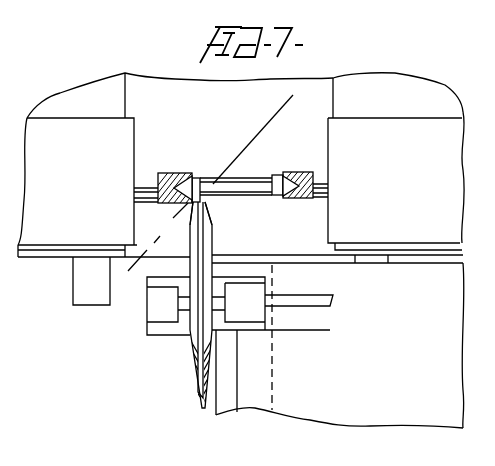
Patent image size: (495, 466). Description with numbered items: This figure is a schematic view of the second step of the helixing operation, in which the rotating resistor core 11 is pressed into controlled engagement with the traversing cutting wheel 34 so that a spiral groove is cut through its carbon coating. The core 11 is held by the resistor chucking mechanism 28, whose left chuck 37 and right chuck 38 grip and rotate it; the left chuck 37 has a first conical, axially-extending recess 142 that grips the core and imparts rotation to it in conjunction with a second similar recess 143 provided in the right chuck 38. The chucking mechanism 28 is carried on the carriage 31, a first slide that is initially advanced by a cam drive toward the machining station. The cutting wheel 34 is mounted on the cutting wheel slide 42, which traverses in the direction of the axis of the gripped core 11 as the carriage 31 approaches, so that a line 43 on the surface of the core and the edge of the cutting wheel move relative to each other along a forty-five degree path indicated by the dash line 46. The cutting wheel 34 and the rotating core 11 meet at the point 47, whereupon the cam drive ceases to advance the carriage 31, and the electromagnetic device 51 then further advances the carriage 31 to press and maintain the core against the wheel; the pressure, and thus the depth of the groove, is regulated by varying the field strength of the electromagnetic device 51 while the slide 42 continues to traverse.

The carriage 31 is at (181, 61).
The resistor chucking mechanism 28 is at (343, 124).
The dash line 46 is at (262, 127).
The left chuck 37 is at (152, 175).
The line 43 is at (204, 174).
The resistor core 11 is at (251, 180).
The right chuck 38 is at (306, 173).
The first conical, axially-extending recess 142 is at (134, 190).
The second recess 143 is at (318, 186).
The point 47 is at (203, 199).
The electromagnetic device 51 is at (238, 263).
The cutting wheel slide 42 is at (327, 332).
The abrasive cutting wheel 34 is at (192, 343).